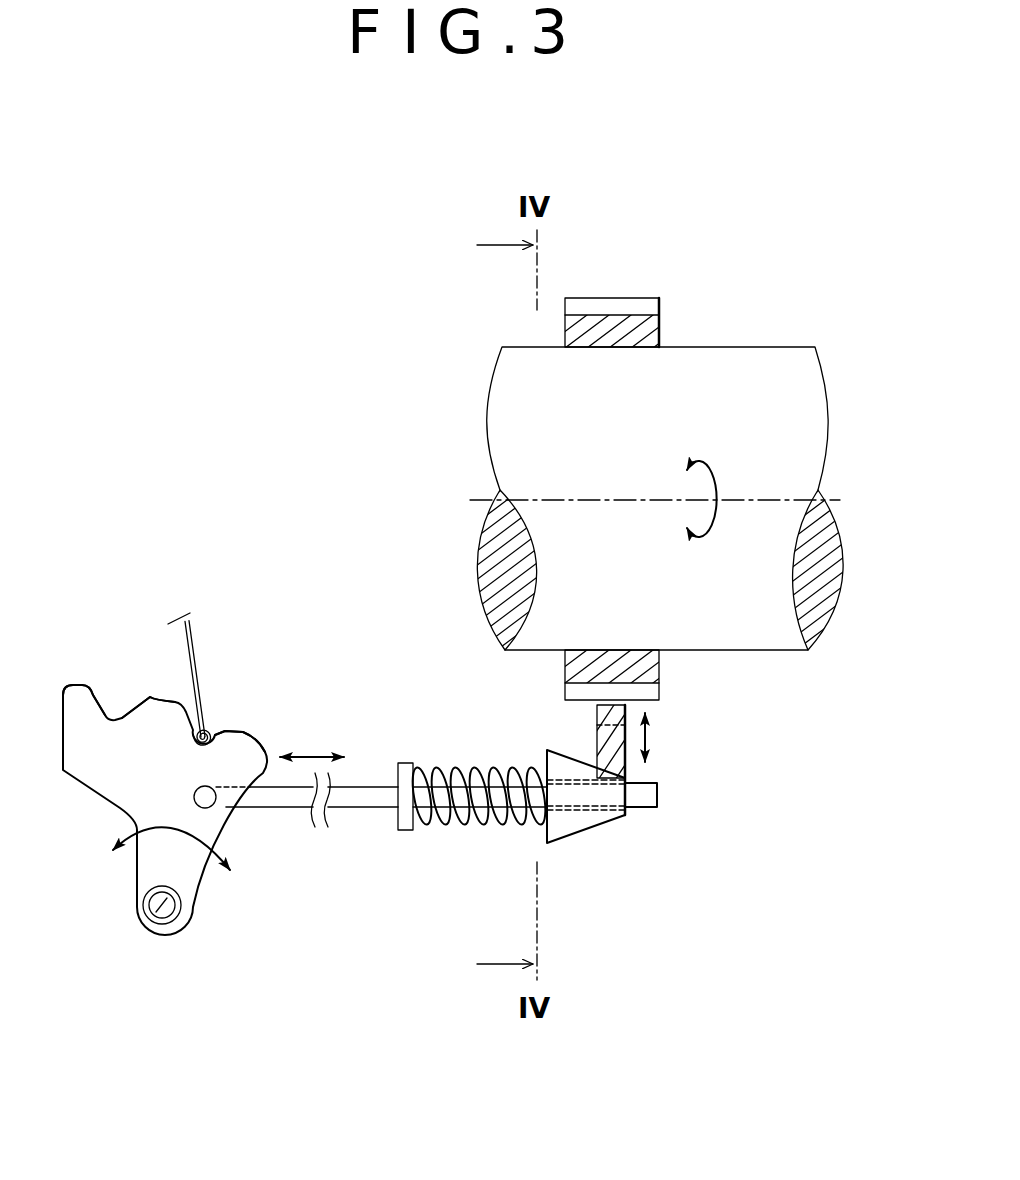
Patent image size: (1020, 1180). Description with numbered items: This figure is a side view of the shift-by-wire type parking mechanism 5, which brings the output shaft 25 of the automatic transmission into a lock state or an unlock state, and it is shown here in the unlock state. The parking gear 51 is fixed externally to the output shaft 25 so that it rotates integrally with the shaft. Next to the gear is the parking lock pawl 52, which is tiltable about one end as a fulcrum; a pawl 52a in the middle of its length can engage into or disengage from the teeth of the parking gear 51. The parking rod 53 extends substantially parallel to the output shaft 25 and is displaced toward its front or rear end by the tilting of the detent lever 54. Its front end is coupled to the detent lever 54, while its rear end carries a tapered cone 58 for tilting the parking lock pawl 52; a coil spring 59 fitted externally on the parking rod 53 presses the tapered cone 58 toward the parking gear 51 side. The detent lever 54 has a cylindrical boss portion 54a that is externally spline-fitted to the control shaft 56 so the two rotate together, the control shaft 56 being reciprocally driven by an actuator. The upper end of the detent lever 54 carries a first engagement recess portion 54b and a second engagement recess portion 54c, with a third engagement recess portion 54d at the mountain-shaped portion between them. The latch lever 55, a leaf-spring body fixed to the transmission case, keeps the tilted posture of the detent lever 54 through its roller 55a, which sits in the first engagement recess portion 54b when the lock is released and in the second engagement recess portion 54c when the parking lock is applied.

The parking mechanism 5 is at (340, 668).
The output shaft 25 is at (746, 380).
The parking gear 51 is at (663, 666).
The parking lock pawl 52 is at (634, 770).
The pawl 52a is at (630, 706).
The parking rod 53 is at (362, 795).
The detent lever 54 is at (103, 806).
The cylindrical boss portion 54a is at (187, 913).
The first engagement recess portion 54b is at (225, 732).
The second engagement recess portion 54c is at (118, 713).
The third engagement recess portion 54d is at (162, 700).
The latch lever 55 is at (193, 667).
The roller 55a is at (216, 725).
The control shaft 56 is at (146, 927).
The tapered cone 58 is at (572, 823).
The coil spring 59 is at (465, 820).